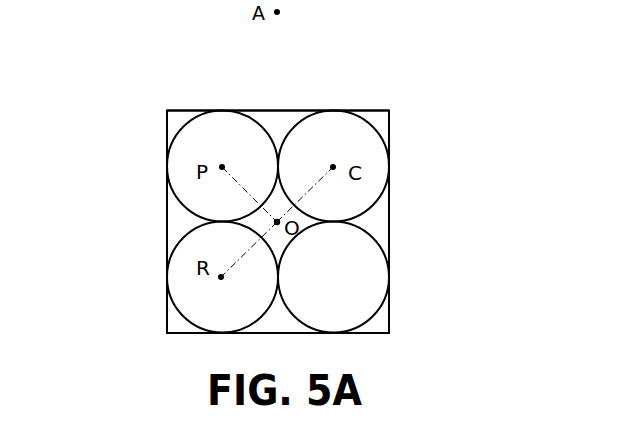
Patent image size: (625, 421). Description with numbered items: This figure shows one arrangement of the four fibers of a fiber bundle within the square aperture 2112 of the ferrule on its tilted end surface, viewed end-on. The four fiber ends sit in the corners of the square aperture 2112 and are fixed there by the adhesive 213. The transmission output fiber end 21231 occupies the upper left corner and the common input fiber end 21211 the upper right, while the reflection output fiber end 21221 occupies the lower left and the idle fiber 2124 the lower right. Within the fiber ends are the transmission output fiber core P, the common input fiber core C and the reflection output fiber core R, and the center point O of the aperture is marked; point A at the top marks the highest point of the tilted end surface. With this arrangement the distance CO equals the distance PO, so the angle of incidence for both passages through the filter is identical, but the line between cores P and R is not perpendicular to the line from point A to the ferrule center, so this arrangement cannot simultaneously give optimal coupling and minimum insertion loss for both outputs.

The adhesive 213 is at (378, 227).
The square aperture 2112 is at (277, 108).
The transmission output fiber end 21231 is at (195, 142).
The common input fiber end 21211 is at (372, 152).
The reflection output fiber end 21221 is at (207, 315).
The idle fiber 2124 is at (353, 303).